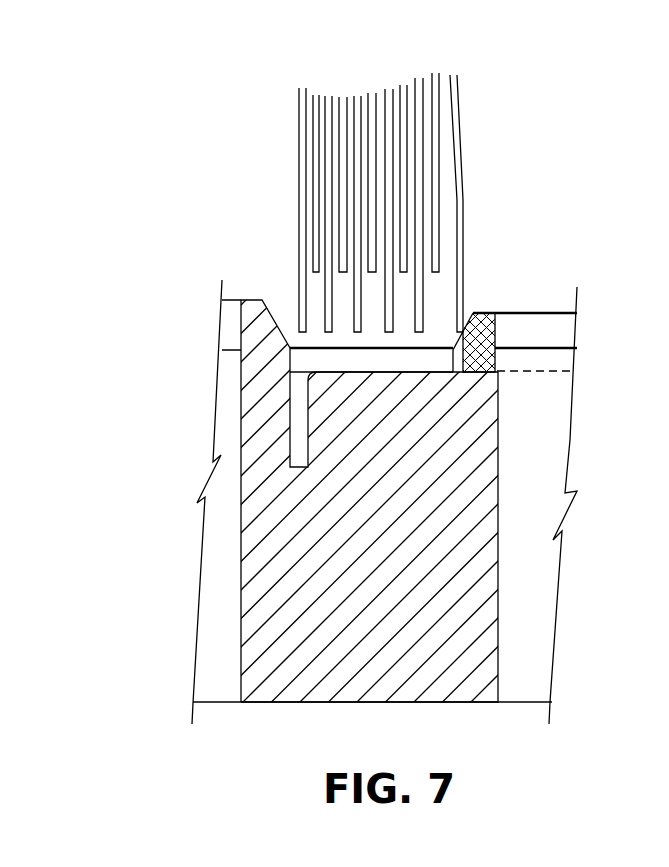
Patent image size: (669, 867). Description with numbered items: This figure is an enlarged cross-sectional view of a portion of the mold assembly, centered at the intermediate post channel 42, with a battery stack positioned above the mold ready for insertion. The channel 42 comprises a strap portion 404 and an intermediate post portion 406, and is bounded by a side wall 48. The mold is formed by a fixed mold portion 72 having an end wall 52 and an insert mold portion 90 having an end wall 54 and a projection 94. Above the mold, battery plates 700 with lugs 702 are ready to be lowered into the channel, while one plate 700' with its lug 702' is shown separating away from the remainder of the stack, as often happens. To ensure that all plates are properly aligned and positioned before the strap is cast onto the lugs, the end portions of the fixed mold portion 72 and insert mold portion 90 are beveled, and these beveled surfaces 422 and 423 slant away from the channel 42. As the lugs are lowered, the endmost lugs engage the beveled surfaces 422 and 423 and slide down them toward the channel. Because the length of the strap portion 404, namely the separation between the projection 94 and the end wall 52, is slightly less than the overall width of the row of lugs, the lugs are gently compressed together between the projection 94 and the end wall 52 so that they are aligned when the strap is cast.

The battery plates 700 is at (321, 205).
The plate 700' is at (506, 177).
The lugs 702 is at (327, 178).
The lug 702' is at (515, 297).
The beveled surface 423 is at (275, 306).
The beveled surface 422 is at (475, 303).
The insert mold portion 90 is at (488, 340).
The fixed mold portion 72 is at (247, 336).
The end wall 54 is at (495, 353).
The end wall 52 is at (291, 349).
The projection 94 is at (445, 366).
The side wall 48 is at (312, 353).
The strap portion 404 is at (432, 362).
The intermediate post channel 42 is at (245, 396).
The intermediate post portion 406 is at (297, 445).